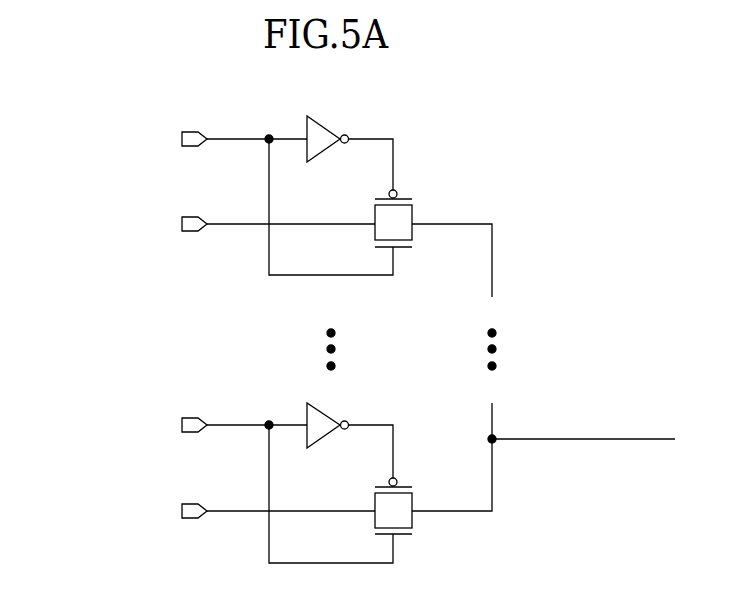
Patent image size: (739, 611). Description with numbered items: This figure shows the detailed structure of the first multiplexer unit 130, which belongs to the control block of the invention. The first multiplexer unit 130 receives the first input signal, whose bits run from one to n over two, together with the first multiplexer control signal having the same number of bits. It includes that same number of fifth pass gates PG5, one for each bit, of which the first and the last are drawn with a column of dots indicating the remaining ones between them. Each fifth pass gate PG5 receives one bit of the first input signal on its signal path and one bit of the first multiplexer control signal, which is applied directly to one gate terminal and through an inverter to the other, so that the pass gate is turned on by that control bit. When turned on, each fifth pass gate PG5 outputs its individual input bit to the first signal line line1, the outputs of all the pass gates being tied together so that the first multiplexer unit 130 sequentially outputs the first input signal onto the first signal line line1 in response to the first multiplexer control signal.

The first multiplexer unit 130 is at (703, 46).
The fifth pass gate PG5 is at (411, 205).
The first signal line line1 is at (573, 439).